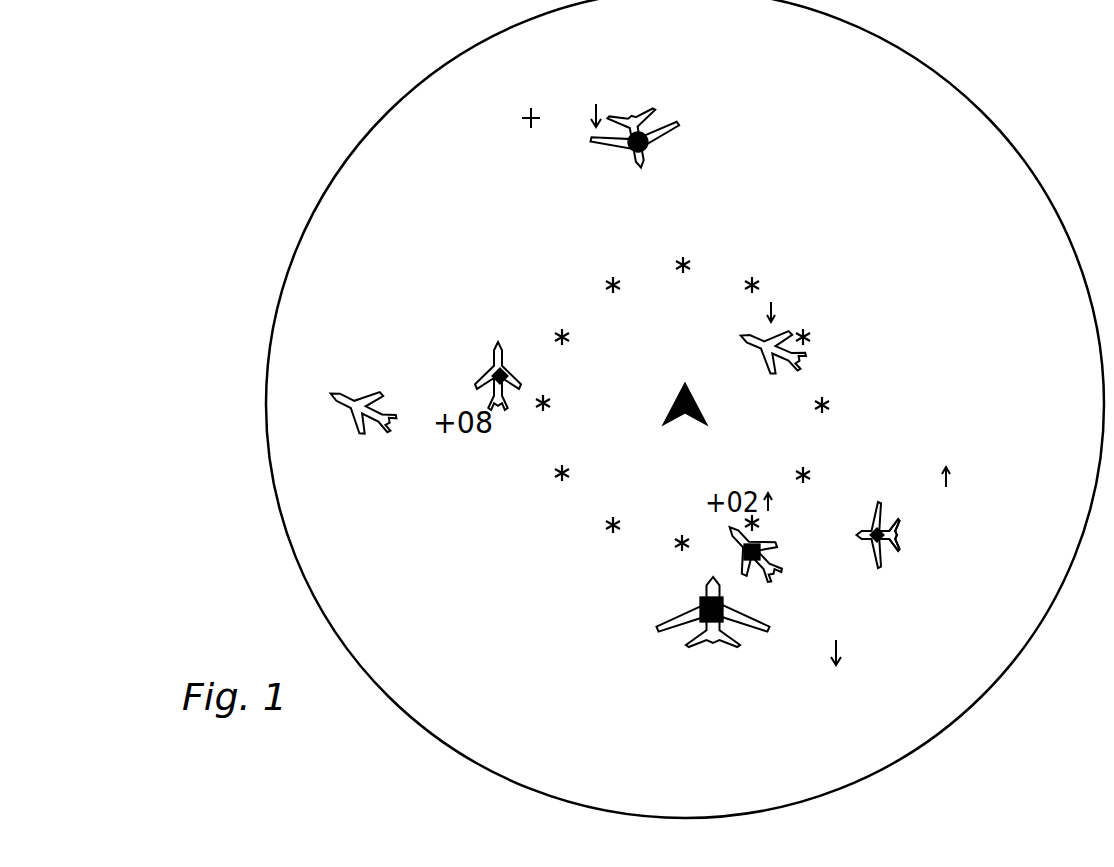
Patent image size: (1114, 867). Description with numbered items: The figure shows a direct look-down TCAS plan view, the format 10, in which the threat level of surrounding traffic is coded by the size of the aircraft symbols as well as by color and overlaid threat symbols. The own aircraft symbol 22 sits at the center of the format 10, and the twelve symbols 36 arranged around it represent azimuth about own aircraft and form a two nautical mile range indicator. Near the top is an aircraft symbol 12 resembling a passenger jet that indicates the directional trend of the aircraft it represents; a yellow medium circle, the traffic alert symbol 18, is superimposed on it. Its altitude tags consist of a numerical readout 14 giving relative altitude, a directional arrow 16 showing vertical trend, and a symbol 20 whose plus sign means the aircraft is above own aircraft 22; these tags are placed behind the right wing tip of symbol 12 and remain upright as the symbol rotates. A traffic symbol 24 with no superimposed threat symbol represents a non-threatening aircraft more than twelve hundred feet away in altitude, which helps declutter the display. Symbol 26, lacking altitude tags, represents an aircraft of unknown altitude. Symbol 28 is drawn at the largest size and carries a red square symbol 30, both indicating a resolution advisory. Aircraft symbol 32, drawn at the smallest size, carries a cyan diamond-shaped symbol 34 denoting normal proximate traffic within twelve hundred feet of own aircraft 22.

The format 10 is at (1028, 87).
The aircraft symbol 12 is at (610, 152).
The numerical readout 14 is at (552, 100).
The directional arrow 16 is at (600, 106).
The traffic alert symbol 18 is at (650, 148).
The symbol 20 is at (520, 122).
The own aircraft symbol 22 is at (675, 396).
The traffic symbol 24 is at (788, 365).
The symbol 26 is at (372, 392).
The symbol 28 is at (770, 614).
The symbol 30 is at (725, 598).
The aircraft symbol 32 is at (877, 566).
The symbol 34 is at (891, 548).
The symbols 36 is at (683, 273).